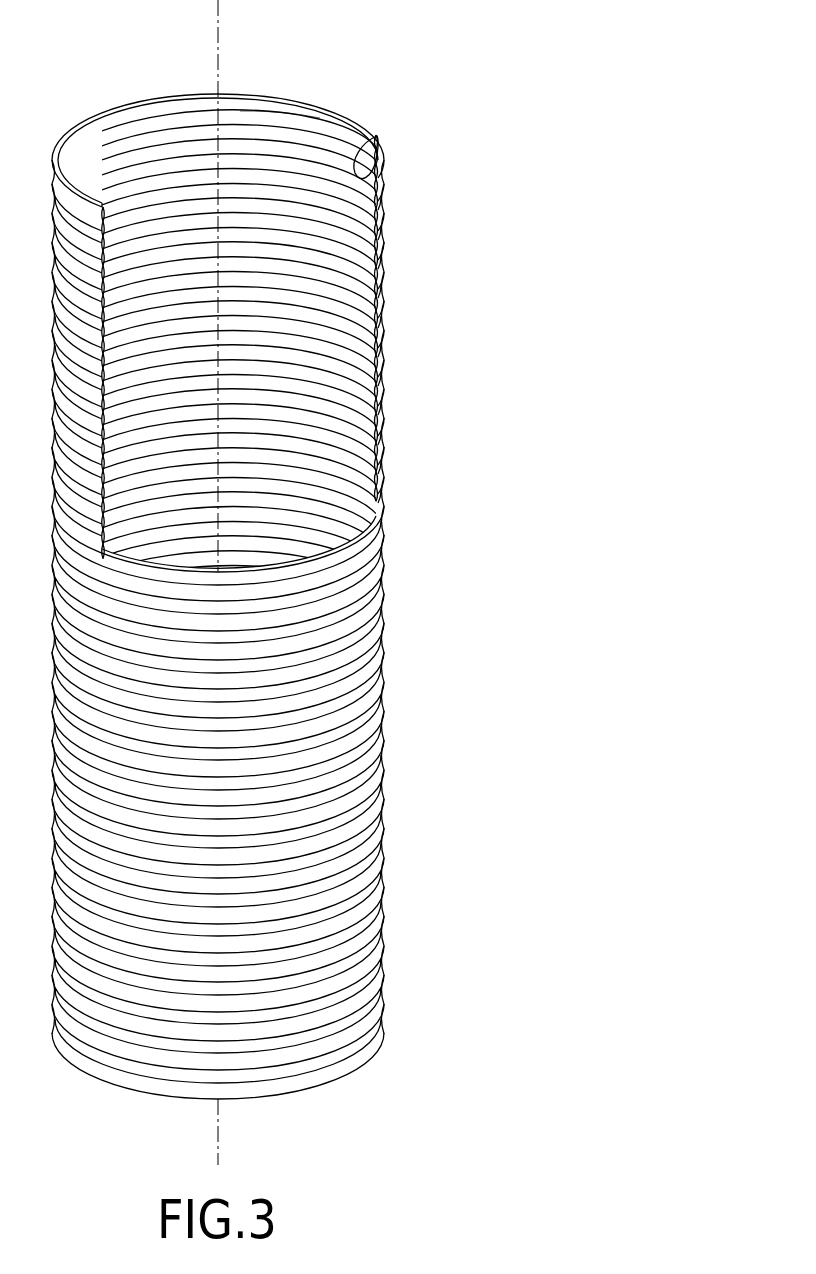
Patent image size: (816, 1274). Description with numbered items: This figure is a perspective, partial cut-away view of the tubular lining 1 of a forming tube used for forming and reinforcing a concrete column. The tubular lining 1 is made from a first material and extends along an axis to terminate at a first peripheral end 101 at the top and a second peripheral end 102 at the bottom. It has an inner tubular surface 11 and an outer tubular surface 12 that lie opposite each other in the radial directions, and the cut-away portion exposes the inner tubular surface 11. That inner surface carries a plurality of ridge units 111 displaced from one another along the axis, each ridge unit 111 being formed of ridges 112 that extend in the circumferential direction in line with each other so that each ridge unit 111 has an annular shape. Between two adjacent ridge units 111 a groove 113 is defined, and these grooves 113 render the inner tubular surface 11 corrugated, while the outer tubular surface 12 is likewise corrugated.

The tubular lining 1 is at (390, 80).
The inner tubular surface 11 is at (270, 143).
The outer tubular surface 12 is at (386, 703).
The first peripheral end 101 is at (95, 115).
The second peripheral end 102 is at (312, 1087).
The ridge unit 111 is at (375, 138).
The ridge 112 is at (250, 116).
The groove 113 is at (373, 230).